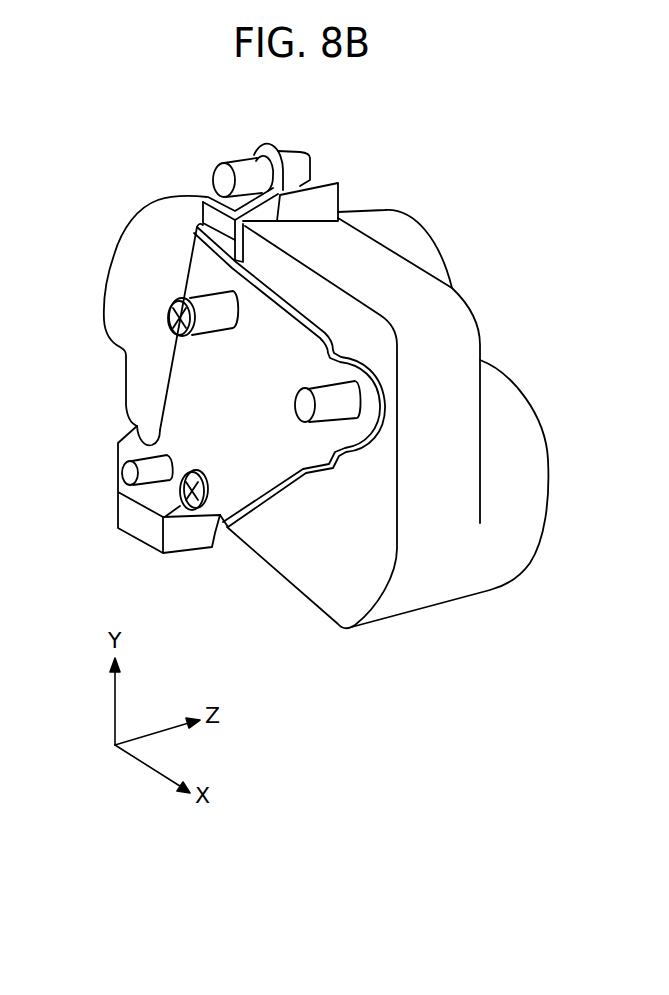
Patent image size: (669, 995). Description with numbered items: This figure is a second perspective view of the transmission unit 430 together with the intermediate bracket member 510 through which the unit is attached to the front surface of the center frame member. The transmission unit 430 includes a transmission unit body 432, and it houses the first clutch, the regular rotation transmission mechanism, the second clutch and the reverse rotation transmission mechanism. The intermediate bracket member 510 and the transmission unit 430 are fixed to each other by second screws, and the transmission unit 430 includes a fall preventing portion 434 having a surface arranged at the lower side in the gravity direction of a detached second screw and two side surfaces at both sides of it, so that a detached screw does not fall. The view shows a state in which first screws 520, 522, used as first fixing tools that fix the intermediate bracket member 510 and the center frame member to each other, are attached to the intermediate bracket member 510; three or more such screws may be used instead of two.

The transmission unit 430 is at (428, 587).
The transmission unit body 432 is at (543, 456).
The fall preventing portion 434 is at (308, 173).
The intermediate bracket member 510 is at (245, 500).
The first screw 520 is at (173, 302).
The first screw 522 is at (188, 471).